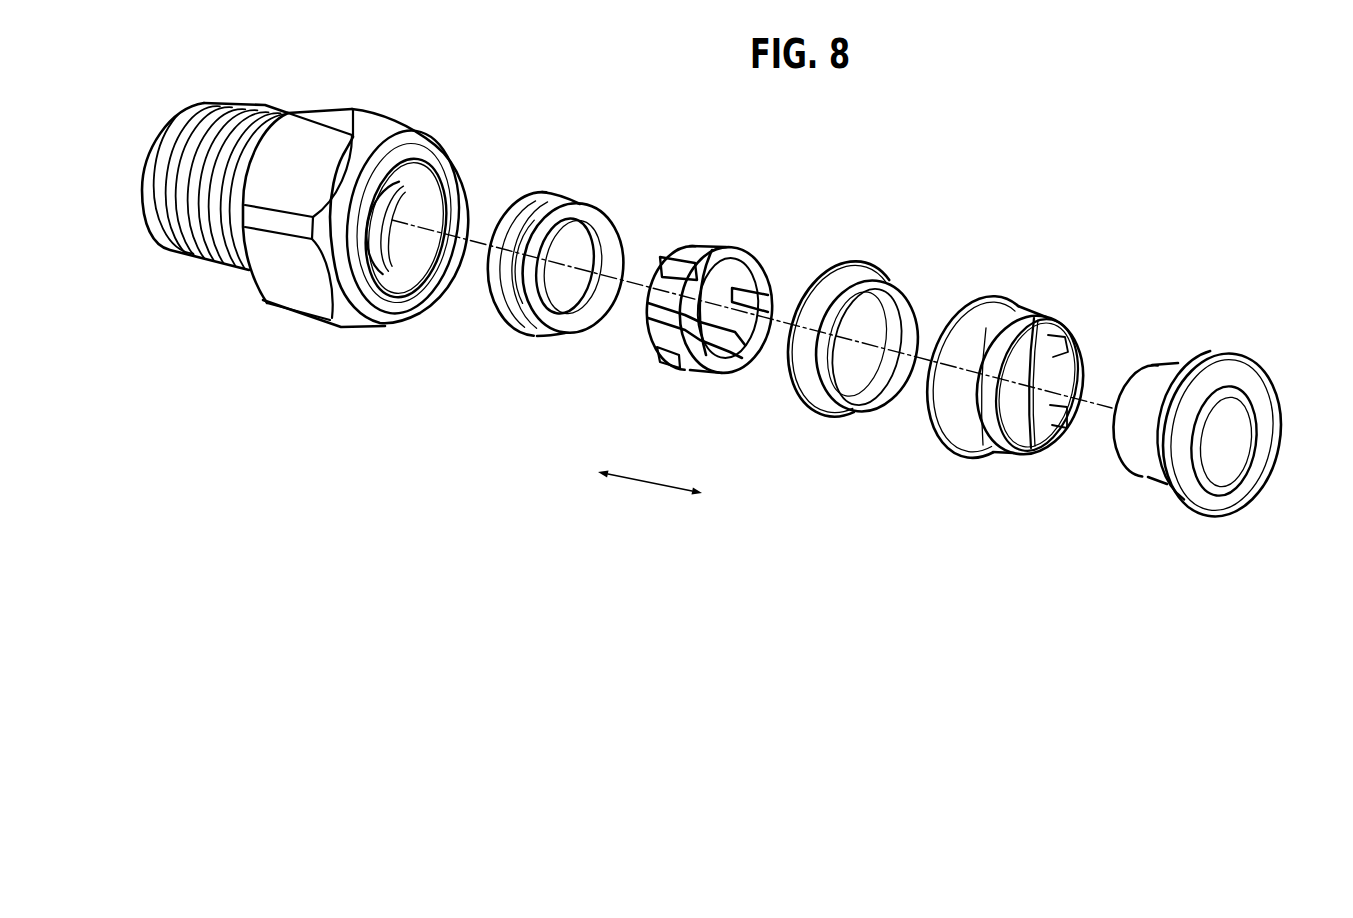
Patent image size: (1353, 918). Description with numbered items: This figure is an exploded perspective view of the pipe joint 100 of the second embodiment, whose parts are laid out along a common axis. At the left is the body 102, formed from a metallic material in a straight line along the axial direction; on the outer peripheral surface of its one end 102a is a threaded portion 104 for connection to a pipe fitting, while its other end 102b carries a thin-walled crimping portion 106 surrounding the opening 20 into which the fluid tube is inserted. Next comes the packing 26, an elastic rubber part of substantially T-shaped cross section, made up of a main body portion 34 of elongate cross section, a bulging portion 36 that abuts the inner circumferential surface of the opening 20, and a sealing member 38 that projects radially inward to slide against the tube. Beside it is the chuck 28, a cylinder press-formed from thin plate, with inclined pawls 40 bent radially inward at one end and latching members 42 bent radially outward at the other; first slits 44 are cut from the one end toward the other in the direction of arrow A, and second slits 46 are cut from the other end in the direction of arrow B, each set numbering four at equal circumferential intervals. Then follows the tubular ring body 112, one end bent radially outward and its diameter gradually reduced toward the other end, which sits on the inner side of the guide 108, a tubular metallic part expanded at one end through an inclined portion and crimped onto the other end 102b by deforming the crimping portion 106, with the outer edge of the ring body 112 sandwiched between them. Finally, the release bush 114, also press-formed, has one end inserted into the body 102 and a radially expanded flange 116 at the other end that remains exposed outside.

The pipe joint 100 is at (750, 131).
The body 102 is at (333, 87).
The one end of the body 102a is at (162, 157).
The other end of the body 102b is at (453, 210).
The threaded portion 104 is at (196, 248).
The crimping portion 106 is at (392, 312).
The opening 20 is at (423, 190).
The packing 26 is at (582, 183).
The main body portion 34 is at (495, 297).
The bulging portion 36 is at (541, 330).
The sealing member 38 is at (588, 248).
The chuck 28 is at (665, 377).
The inclined pawls 40 is at (648, 340).
The latching members 42 is at (768, 274).
The first slits 44 is at (673, 260).
The second slits 46 is at (760, 350).
The ring body 112 is at (903, 273).
The guide 108 is at (1054, 305).
The release bush 114 is at (1260, 356).
The flange 116 is at (1223, 500).